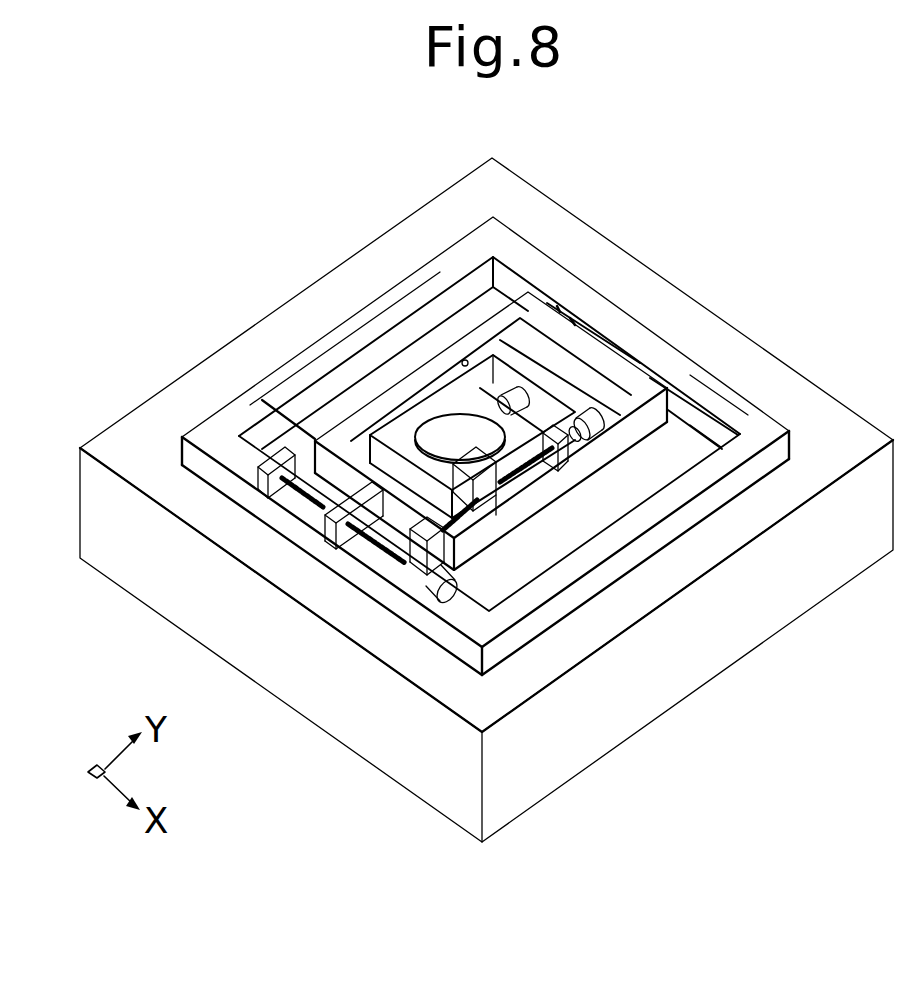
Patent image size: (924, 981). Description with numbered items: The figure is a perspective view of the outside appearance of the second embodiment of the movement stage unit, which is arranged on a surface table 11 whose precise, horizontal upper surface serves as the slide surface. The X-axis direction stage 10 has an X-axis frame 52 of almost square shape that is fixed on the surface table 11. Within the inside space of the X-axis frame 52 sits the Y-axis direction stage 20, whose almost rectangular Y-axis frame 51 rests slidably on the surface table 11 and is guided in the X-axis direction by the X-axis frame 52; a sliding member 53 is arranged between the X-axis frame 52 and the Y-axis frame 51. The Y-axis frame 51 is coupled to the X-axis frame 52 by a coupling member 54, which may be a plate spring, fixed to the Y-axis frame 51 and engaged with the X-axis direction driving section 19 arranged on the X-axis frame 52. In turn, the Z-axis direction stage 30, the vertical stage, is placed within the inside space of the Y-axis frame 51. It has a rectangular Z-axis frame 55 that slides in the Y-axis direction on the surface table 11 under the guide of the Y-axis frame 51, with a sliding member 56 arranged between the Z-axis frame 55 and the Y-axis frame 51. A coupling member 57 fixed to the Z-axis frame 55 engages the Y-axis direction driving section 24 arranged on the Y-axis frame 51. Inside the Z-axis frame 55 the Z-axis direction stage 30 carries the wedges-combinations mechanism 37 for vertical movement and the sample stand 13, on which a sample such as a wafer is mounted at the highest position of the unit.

The X-axis direction stage 10 is at (240, 506).
The surface table 11 is at (566, 771).
The sample stand 13 is at (443, 432).
The X-axis direction driving section 19 is at (388, 568).
The Y-axis direction stage 20 is at (309, 434).
The Y-axis direction driving section 24 is at (550, 405).
The Z-axis direction stage 30 is at (500, 338).
The wedges-combinations mechanism 37 is at (452, 395).
The Y-axis frame 51 is at (477, 540).
The X-axis frame 52 is at (748, 413).
The sliding member 53 is at (552, 307).
The coupling member 54 is at (326, 522).
The Z-axis frame 55 is at (558, 424).
The sliding member 56 is at (462, 360).
The coupling member 57 is at (507, 490).